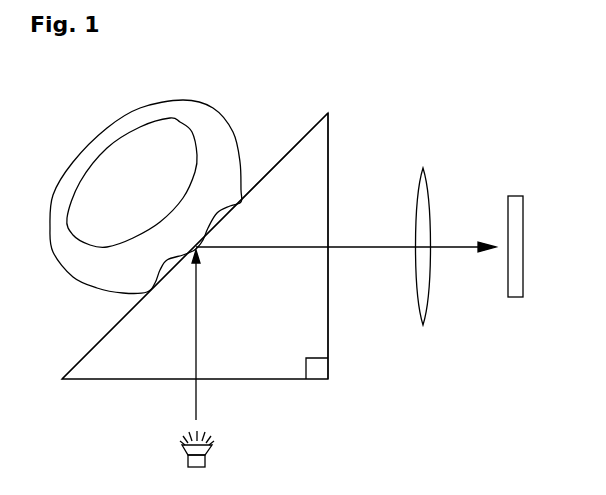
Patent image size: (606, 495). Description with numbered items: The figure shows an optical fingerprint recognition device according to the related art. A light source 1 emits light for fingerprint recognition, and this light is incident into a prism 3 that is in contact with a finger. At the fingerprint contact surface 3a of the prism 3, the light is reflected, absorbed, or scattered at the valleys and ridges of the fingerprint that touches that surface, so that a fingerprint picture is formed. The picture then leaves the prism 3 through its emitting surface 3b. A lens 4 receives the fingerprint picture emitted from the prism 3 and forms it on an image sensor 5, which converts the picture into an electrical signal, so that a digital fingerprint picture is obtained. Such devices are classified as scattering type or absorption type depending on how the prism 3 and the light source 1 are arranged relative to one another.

The light source 1 is at (187, 458).
The prism 3 is at (274, 358).
The fingerprint contact surface 3a is at (80, 358).
The emitting surface 3b is at (328, 138).
The lens 4 is at (423, 168).
The image sensor 5 is at (515, 195).